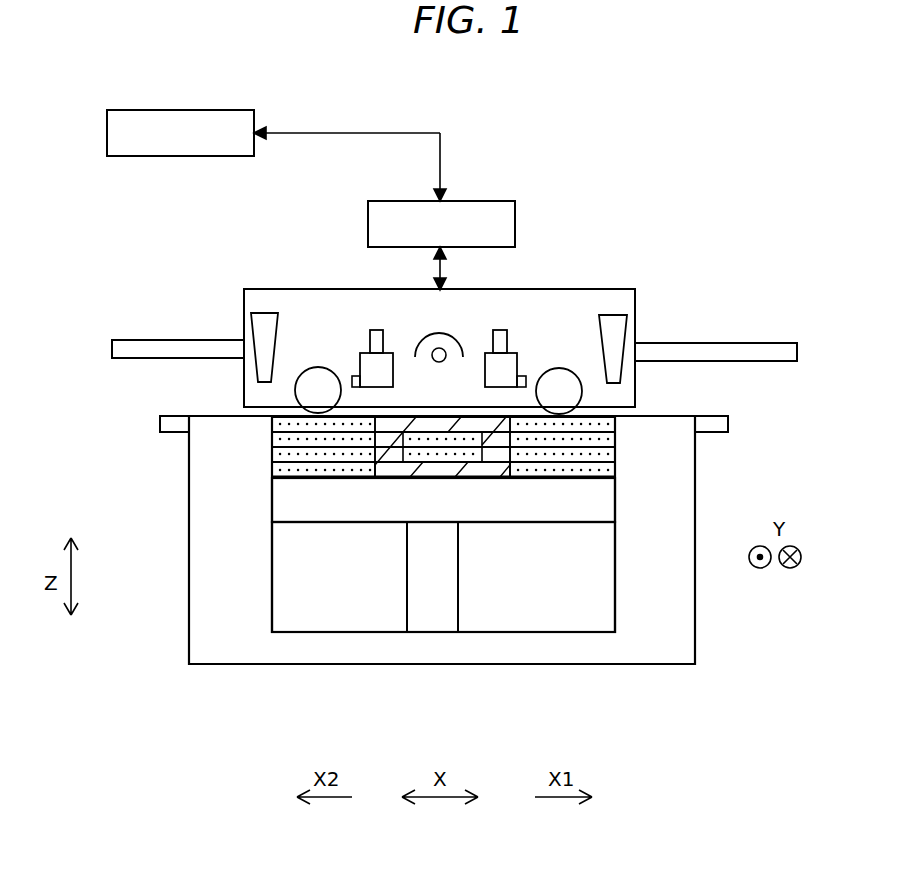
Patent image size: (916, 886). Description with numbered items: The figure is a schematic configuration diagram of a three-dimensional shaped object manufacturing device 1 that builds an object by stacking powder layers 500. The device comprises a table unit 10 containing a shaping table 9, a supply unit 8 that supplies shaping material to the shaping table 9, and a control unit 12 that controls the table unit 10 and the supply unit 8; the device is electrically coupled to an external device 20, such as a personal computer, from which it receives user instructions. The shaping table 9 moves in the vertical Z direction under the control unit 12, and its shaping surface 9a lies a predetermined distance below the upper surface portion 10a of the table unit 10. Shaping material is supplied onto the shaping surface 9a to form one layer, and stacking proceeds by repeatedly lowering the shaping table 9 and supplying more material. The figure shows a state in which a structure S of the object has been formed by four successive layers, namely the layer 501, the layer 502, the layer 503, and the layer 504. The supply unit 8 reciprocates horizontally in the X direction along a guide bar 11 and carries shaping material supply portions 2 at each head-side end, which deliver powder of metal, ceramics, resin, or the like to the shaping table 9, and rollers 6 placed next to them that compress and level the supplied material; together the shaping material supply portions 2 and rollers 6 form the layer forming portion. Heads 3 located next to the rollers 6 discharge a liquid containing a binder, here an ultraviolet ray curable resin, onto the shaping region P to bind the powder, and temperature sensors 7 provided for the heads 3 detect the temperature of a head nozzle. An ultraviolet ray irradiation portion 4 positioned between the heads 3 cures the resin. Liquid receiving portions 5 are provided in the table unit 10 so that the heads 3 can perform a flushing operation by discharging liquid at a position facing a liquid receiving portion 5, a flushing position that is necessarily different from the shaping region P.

The three-dimensional shaped object manufacturing device 1 is at (822, 286).
The shaping material supply portion 2 is at (265, 313).
The head 3 is at (377, 330).
The ultraviolet ray irradiation portion 4 is at (437, 335).
The liquid receiving portion 5 is at (172, 416).
The roller 6 is at (318, 366).
The temperature sensor 7 is at (354, 378).
The supply unit 8 is at (244, 298).
The shaping table 9 is at (307, 507).
The shaping surface 9a is at (272, 481).
The table unit 10 is at (189, 478).
The upper surface portion 10a is at (216, 408).
The guide bar 11 is at (738, 343).
The control unit 12 is at (503, 201).
The external device 20 is at (152, 110).
The layers 500 is at (620, 417).
The layer 501 is at (272, 470).
The layer 502 is at (270, 455).
The layer 503 is at (270, 440).
The layer 504 is at (268, 420).
The structure S is at (363, 470).
The shaping region P is at (483, 470).